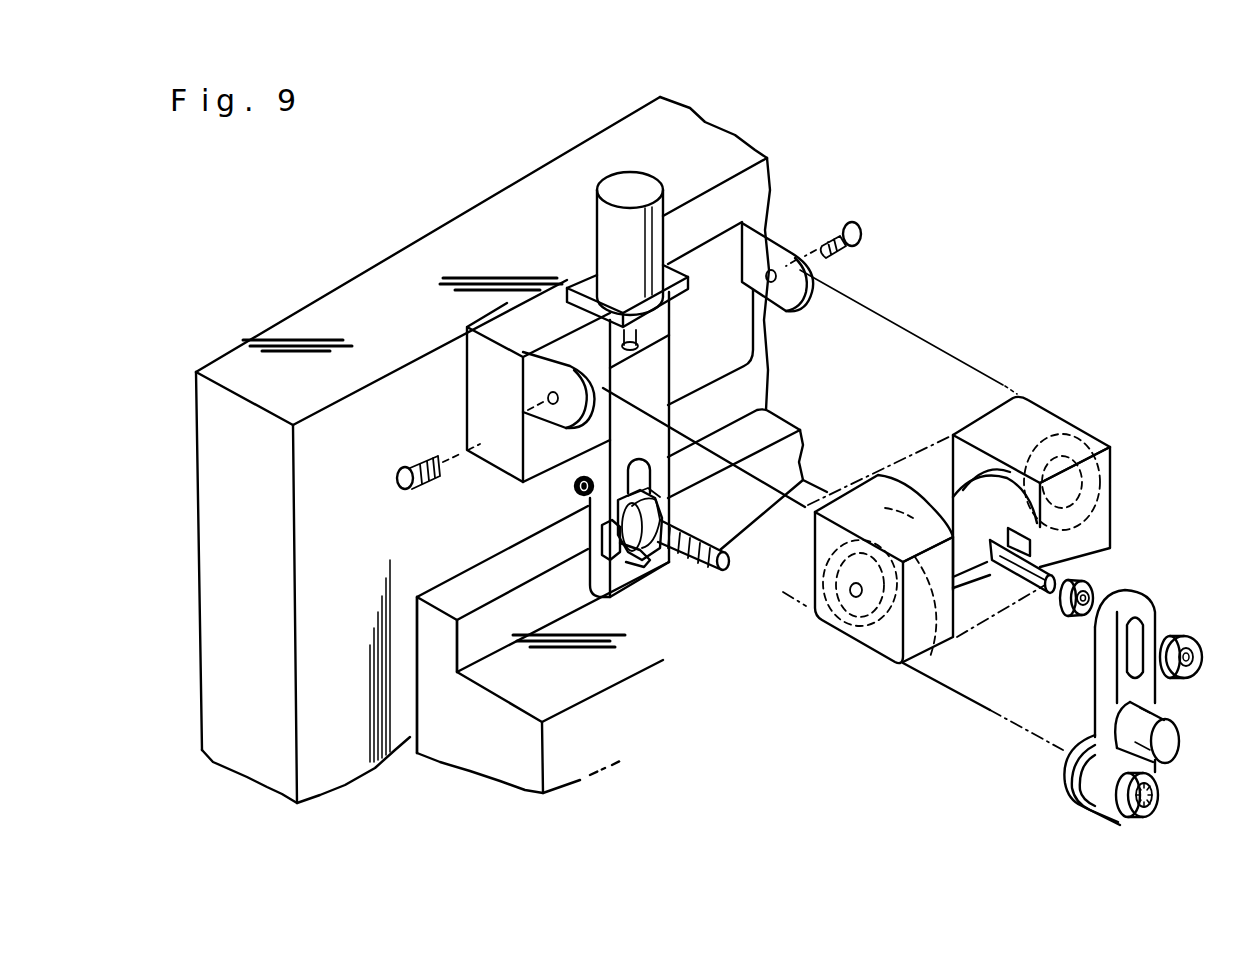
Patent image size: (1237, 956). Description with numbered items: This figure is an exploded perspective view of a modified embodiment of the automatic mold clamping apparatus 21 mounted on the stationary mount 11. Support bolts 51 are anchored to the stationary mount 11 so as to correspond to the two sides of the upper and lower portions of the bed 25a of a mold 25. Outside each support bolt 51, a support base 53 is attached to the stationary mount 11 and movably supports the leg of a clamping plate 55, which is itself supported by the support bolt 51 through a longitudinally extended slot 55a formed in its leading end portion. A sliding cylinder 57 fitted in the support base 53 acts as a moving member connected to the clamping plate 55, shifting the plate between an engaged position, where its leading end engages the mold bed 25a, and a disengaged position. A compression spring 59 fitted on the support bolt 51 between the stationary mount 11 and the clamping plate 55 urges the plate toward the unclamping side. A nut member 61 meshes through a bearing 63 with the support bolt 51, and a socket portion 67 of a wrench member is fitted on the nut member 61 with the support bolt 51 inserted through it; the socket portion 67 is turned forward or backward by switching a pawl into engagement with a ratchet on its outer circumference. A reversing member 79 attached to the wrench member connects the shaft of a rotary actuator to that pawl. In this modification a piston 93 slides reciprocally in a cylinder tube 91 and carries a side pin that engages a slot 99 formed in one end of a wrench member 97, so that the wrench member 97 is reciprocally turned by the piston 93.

The stationary mount 11 is at (457, 250).
The automatic mold clamping apparatus 21 is at (975, 356).
The mold 25 is at (515, 797).
The bed 25a is at (433, 737).
The support bolt 51 is at (733, 565).
The support base 53 is at (713, 235).
The clamping plate 55 is at (625, 597).
The slot 55a is at (682, 545).
The sliding cylinder 57 is at (618, 190).
The compression spring 59 is at (578, 497).
The nut member 61 is at (660, 548).
The bearing 63 is at (642, 568).
The socket portion 67 is at (1158, 784).
The reversing member 79 is at (1158, 745).
The cylinder tube 91 is at (863, 647).
The piston 93 is at (1108, 547).
The wrench member 97 is at (1093, 667).
The slot 99 is at (1143, 648).